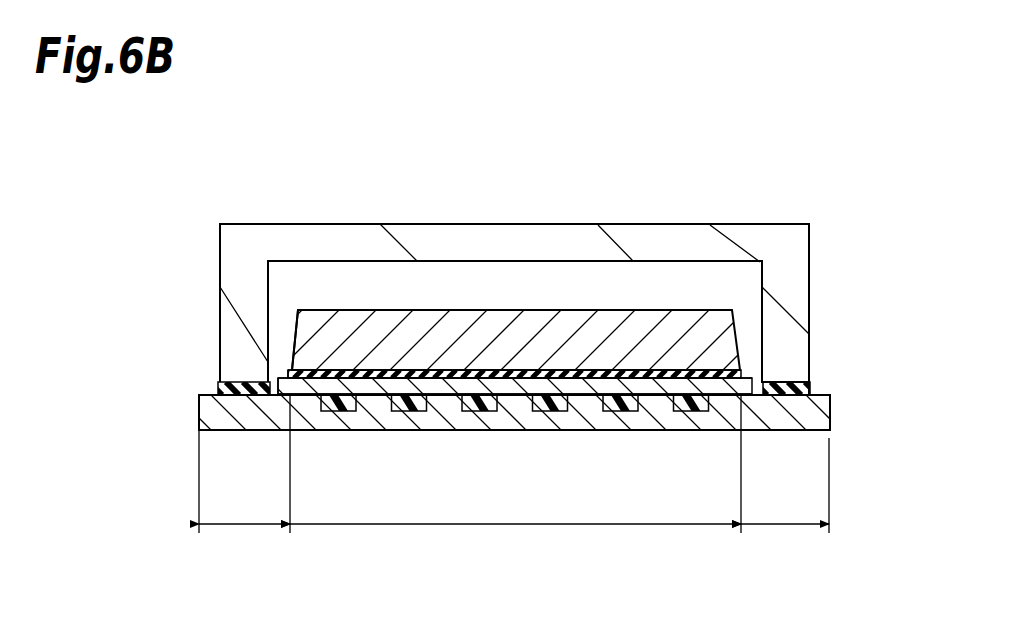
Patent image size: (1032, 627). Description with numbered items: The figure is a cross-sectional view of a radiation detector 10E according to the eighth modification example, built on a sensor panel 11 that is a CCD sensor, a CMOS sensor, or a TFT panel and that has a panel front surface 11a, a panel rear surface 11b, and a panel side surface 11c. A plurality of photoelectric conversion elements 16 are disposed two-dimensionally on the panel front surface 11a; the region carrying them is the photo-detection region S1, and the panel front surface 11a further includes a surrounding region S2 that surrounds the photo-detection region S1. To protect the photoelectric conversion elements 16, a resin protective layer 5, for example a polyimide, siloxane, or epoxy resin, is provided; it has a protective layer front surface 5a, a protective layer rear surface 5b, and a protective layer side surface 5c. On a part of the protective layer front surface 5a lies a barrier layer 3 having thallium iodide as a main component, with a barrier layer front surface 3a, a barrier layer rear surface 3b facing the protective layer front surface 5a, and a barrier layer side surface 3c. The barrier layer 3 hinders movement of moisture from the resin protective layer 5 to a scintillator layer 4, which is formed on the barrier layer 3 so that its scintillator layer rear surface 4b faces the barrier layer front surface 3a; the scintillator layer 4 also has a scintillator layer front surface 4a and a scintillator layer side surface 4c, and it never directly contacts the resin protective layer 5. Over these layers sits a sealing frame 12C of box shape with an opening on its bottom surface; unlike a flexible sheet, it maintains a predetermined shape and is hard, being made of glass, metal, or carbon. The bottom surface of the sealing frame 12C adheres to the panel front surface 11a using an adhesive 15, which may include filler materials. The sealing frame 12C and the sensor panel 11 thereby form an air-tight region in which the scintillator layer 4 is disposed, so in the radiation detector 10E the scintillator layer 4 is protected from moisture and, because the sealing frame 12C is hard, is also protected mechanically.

The radiation detector 10E is at (617, 140).
The sealing frame 12C is at (712, 222).
The scintillator layer 4 is at (744, 334).
The scintillator layer front surface 4a is at (437, 370).
The scintillator layer rear surface 4b is at (492, 310).
The scintillator layer side surface 4c is at (296, 340).
The barrier layer 3 is at (746, 371).
The barrier layer front surface 3a is at (377, 384).
The barrier layer rear surface 3b is at (363, 384).
The barrier layer side surface 3c is at (279, 372).
The resin protective layer 5 is at (754, 381).
The protective layer front surface 5a is at (516, 378).
The protective layer rear surface 5b is at (508, 376).
The protective layer side surface 5c is at (277, 380).
The adhesive 15 is at (218, 384).
The photoelectric conversion element 16 is at (622, 411).
The sensor panel 11 is at (837, 418).
The panel front surface 11a is at (205, 394).
The panel rear surface 11b is at (707, 432).
The panel side surface 11c is at (200, 418).
The photo-detection region S1 is at (513, 527).
The surrounding region S2 is at (243, 527).